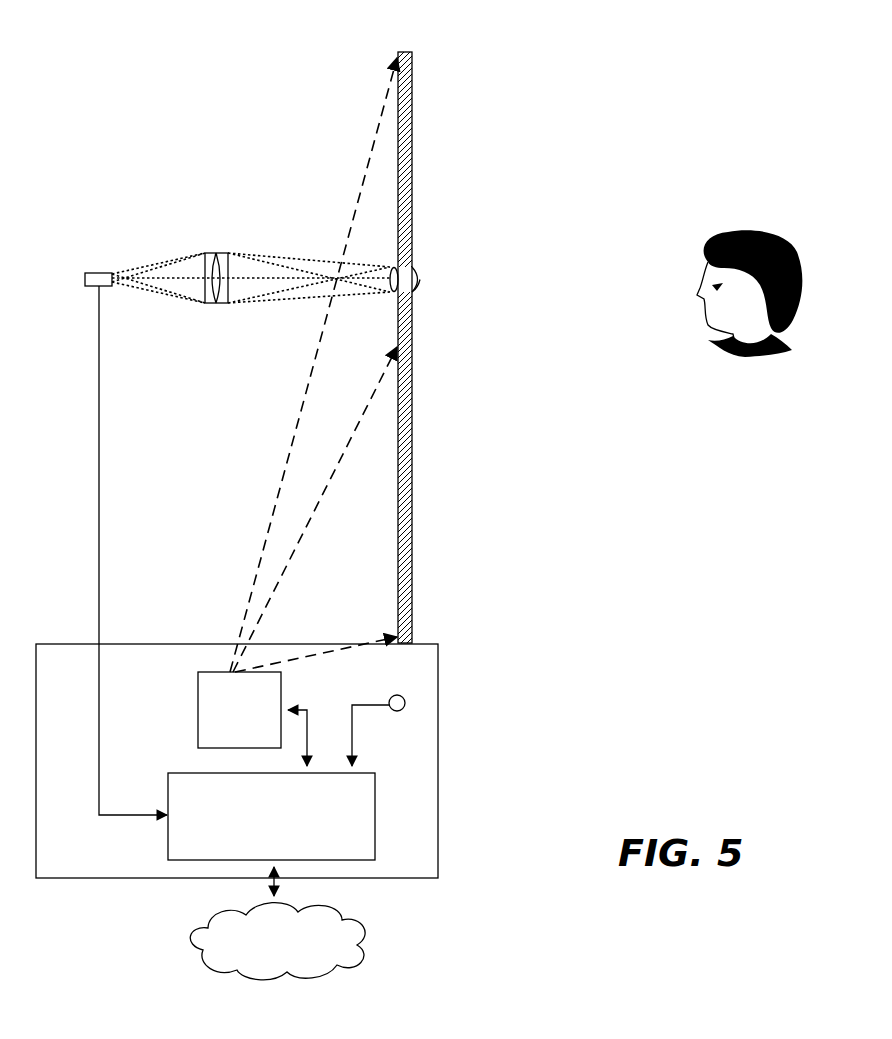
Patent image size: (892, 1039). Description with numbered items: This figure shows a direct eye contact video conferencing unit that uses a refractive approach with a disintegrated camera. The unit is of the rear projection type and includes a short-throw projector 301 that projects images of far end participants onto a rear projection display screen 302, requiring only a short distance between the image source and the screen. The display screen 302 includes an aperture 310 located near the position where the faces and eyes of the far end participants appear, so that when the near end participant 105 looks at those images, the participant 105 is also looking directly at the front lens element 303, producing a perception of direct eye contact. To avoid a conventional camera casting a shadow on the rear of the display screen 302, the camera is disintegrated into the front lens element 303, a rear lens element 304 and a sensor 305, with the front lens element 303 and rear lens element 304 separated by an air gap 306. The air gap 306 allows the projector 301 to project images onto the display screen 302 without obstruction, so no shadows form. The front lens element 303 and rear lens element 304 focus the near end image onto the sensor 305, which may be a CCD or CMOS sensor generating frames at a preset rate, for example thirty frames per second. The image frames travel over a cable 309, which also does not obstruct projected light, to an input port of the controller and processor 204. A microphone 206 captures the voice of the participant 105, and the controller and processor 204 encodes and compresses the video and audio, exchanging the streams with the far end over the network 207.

The participant 105 is at (742, 232).
The controller and processor 204 is at (271, 803).
The microphone 206 is at (400, 711).
The network 207 is at (277, 941).
The short-throw projector 301 is at (198, 678).
The display screen 302 is at (405, 52).
The front lens element 303 is at (421, 274).
The rear lens element 304 is at (214, 251).
The sensor 305 is at (99, 273).
The air gap 306 is at (230, 243).
The cable 309 is at (99, 380).
The aperture 310 is at (416, 295).